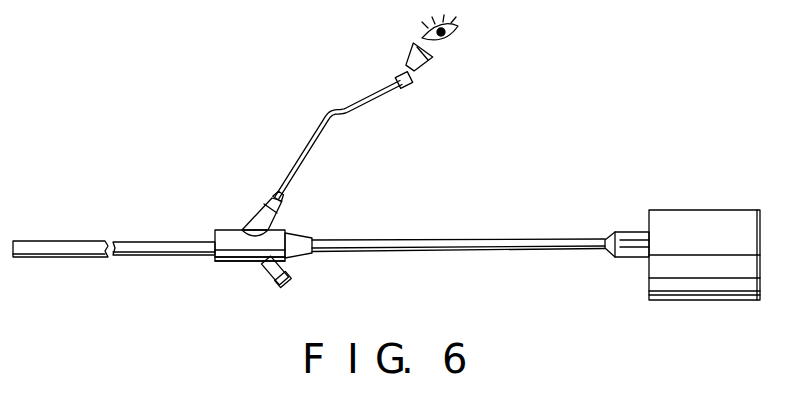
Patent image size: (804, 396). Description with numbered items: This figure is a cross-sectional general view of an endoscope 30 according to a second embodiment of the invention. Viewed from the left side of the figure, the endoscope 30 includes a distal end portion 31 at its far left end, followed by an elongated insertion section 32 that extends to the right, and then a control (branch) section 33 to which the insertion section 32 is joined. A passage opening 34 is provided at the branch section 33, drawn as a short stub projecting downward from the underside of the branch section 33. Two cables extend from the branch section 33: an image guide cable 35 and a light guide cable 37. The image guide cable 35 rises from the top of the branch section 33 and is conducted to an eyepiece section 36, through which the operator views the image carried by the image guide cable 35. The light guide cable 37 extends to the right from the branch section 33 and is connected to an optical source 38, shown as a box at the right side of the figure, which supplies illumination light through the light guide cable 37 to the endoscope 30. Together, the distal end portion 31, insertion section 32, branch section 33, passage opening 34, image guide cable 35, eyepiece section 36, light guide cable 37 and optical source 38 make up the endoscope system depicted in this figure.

The endoscope 30 is at (220, 216).
The distal end portion 31 is at (33, 253).
The insertion section 32 is at (138, 243).
The control (branch) section 33 is at (233, 262).
The passage opening 34 is at (283, 281).
The image guide cable 35 is at (323, 138).
The eyepiece section 36 is at (408, 58).
The light guide cable 37 is at (475, 251).
The optical source 38 is at (687, 219).